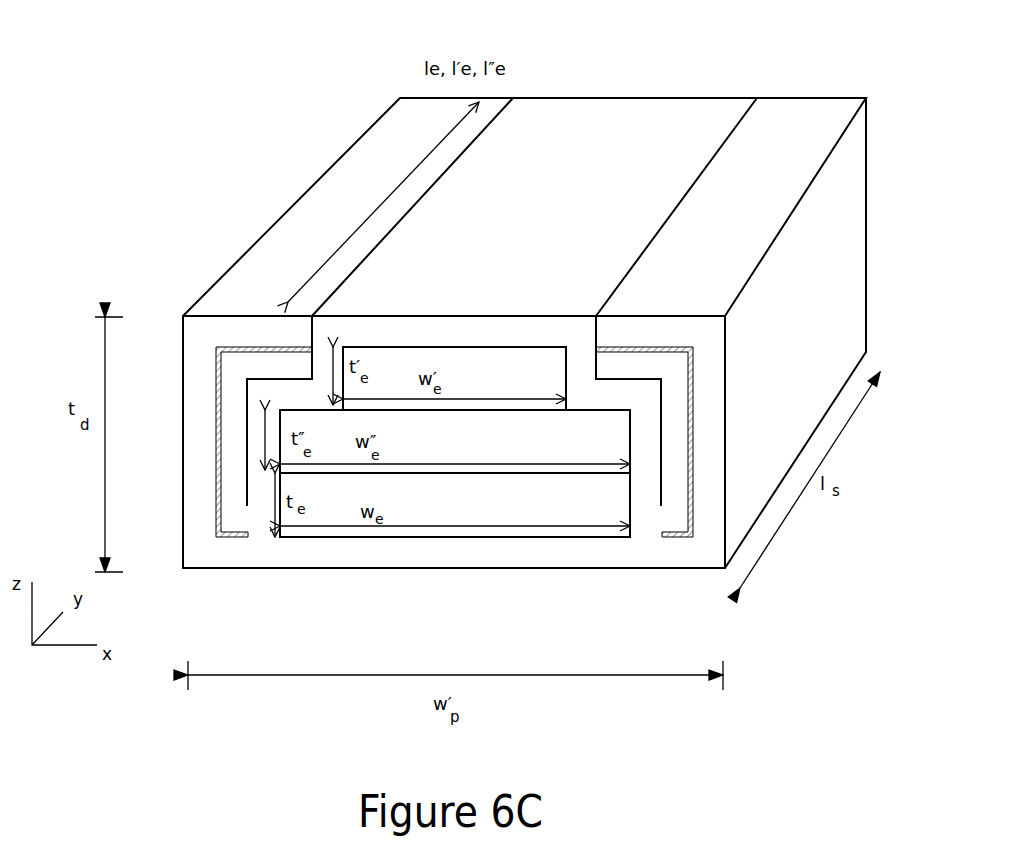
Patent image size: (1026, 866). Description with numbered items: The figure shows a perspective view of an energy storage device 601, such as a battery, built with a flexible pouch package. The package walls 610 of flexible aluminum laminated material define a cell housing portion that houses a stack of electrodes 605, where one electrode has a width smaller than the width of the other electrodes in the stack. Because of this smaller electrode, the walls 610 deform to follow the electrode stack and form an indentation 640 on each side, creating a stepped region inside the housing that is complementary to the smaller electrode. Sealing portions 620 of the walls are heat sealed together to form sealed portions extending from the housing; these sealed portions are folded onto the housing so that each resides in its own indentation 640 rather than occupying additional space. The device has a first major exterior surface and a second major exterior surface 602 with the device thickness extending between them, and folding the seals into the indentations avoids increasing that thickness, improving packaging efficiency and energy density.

The energy storage device 601 is at (735, 58).
The second major exterior surface 602 is at (515, 315).
The stack of electrodes 605 is at (603, 617).
The package walls and portions 610 is at (553, 138).
The sealing portions 620 is at (216, 402).
The indentation 640 is at (293, 380).